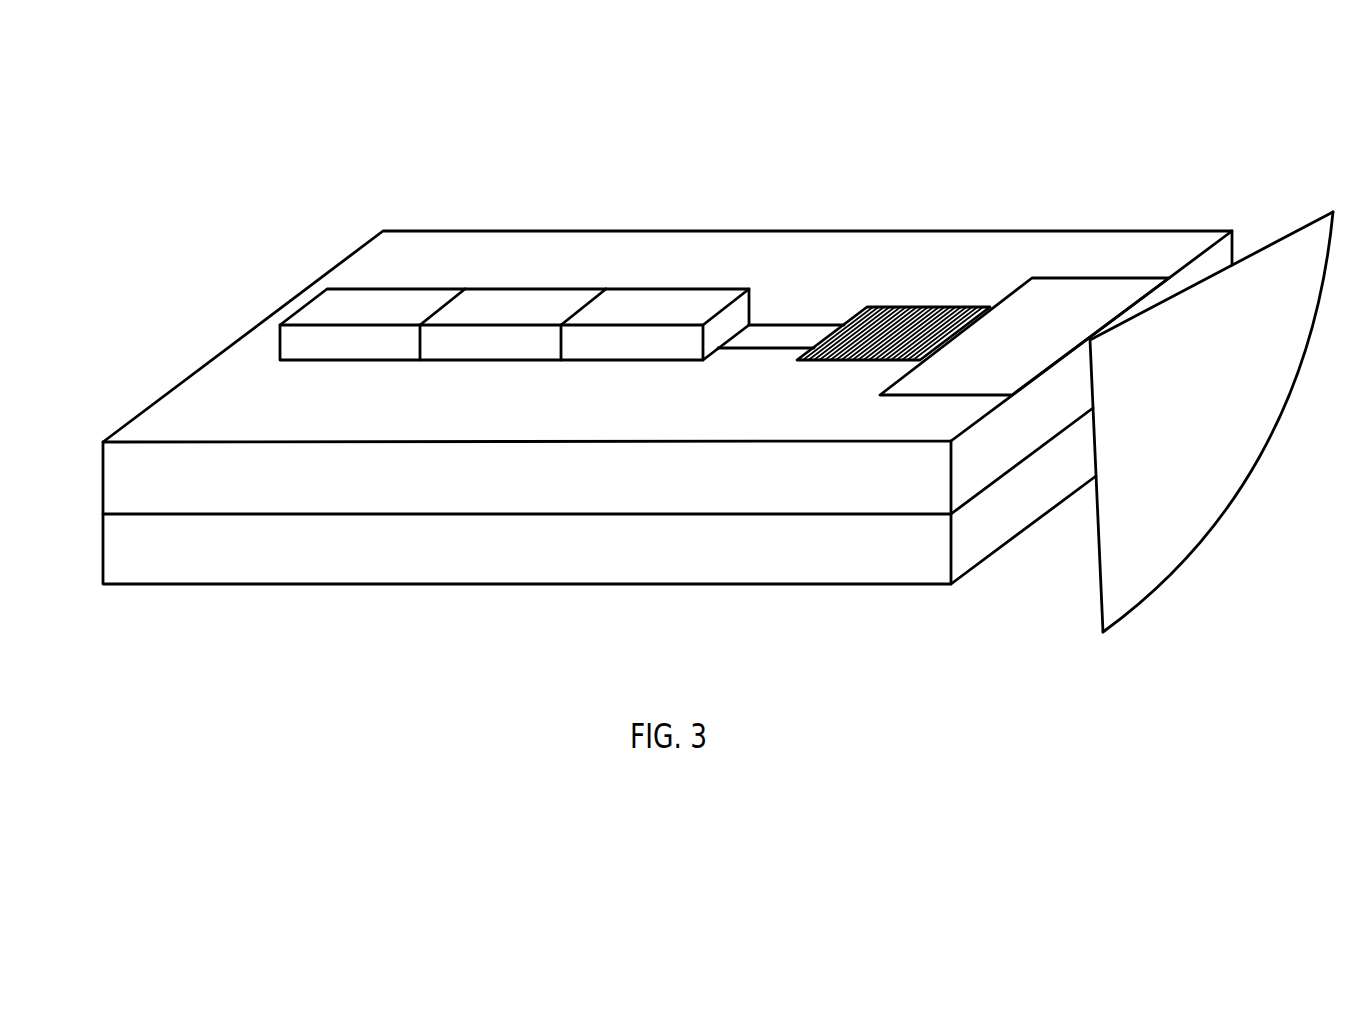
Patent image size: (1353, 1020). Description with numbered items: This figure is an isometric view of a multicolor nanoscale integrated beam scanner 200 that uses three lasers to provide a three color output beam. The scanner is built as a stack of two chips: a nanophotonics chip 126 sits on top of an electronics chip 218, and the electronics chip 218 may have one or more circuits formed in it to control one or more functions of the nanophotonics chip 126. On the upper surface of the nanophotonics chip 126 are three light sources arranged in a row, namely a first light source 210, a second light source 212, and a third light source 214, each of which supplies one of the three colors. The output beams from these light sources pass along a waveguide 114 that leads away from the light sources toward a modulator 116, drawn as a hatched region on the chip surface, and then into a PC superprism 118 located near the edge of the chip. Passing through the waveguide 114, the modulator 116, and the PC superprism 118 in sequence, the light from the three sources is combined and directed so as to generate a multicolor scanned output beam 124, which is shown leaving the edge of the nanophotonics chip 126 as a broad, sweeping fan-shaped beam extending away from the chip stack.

The multicolor nanoscale integrated beam scanner 200 is at (1208, 127).
The nanophotonics chip 126 is at (177, 388).
The electronics chip 218 is at (178, 585).
The multicolor scanned output beam 124 is at (1292, 230).
The first light source 210 is at (418, 288).
The second light source 212 is at (572, 288).
The third light source 214 is at (715, 288).
The waveguide 114 is at (786, 323).
The modulator 116 is at (918, 306).
The PC superprism 118 is at (1055, 303).